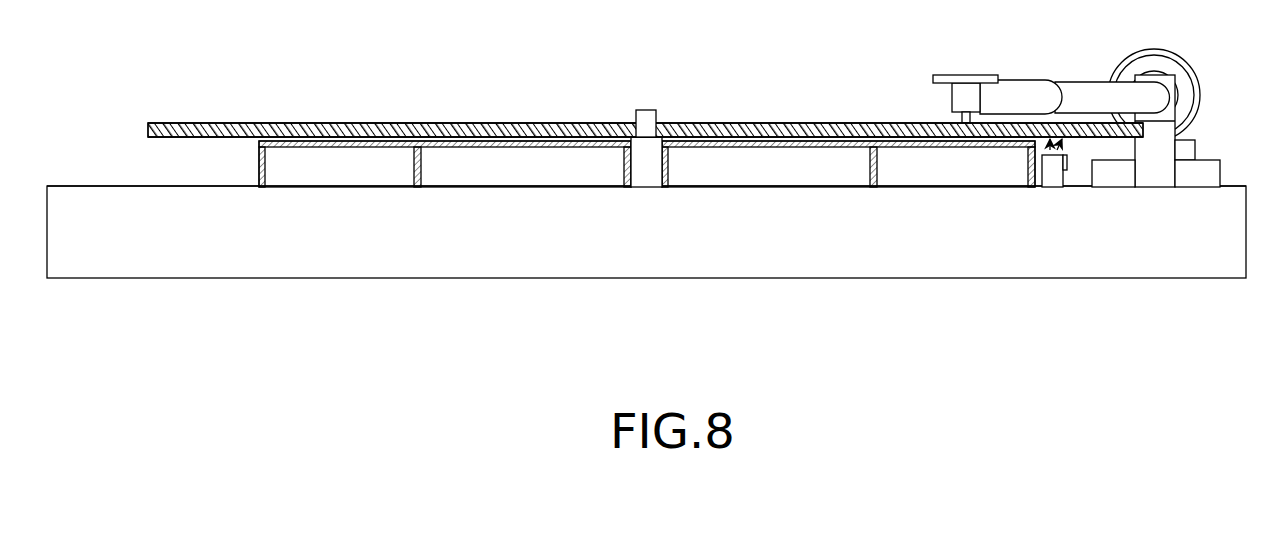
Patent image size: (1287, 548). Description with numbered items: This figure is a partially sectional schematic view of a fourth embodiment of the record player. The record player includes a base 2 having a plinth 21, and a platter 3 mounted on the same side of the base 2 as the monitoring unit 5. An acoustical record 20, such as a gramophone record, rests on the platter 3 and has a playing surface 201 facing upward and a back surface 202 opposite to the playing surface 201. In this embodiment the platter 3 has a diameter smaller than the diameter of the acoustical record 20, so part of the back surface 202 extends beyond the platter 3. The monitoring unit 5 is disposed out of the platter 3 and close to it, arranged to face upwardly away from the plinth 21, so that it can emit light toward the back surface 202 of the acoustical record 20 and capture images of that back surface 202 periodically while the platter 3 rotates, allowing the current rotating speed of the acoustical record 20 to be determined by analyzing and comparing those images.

The base 2 is at (700, 252).
The plinth 21 is at (370, 250).
The acoustical record 20 is at (318, 128).
The playing surface 201 is at (183, 123).
The back surface 202 is at (193, 138).
The platter 3 is at (250, 172).
The monitoring unit 5 is at (1054, 173).